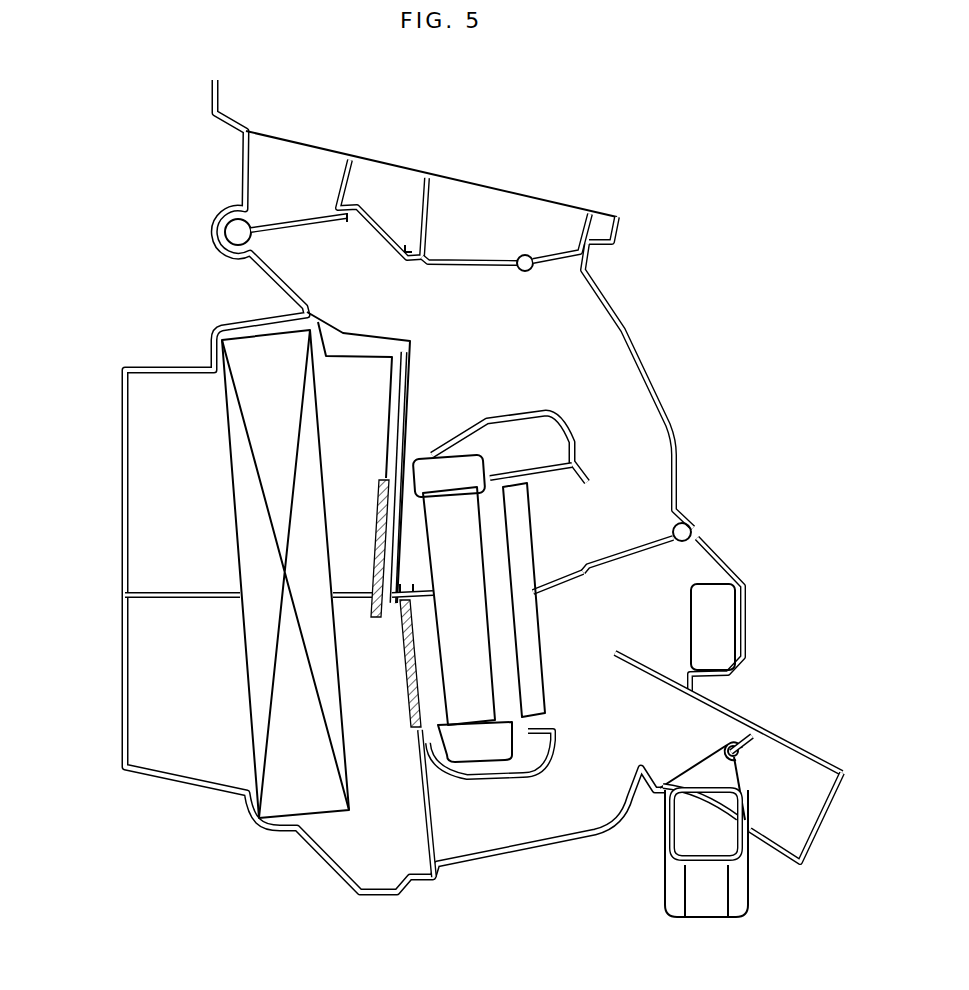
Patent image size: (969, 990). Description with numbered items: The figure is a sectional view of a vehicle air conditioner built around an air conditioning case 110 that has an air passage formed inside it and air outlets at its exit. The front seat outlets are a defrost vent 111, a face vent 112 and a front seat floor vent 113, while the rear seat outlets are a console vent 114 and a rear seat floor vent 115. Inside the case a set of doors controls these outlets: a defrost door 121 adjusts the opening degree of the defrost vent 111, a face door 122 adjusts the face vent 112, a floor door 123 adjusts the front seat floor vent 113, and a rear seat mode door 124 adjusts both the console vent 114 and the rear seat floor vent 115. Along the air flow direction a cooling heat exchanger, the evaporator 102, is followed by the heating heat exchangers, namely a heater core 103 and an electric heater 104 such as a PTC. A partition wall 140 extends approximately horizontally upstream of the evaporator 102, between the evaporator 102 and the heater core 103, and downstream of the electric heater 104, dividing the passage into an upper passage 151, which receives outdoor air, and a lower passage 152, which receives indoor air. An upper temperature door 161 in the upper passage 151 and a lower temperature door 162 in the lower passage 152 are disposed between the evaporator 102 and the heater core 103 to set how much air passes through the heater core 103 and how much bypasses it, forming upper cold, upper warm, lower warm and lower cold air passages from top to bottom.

The evaporator 102 is at (283, 803).
The heater core 103 is at (472, 705).
The electric heater 104 is at (538, 717).
The air conditioning case 110 is at (377, 893).
The defrost vent 111 is at (298, 160).
The face vent 112 is at (490, 210).
The front seat floor vent 113 is at (712, 632).
The console vent 114 is at (785, 812).
The rear seat floor vent 115 is at (697, 843).
The defrost door 121 is at (313, 217).
The face door 122 is at (557, 263).
The floor door 123 is at (667, 563).
The rear seat mode door 124 is at (730, 790).
The partition wall 140 is at (163, 597).
The upper passage 151 is at (170, 473).
The lower passage 152 is at (170, 672).
The upper temperature door 161 is at (378, 515).
The lower temperature door 162 is at (410, 683).